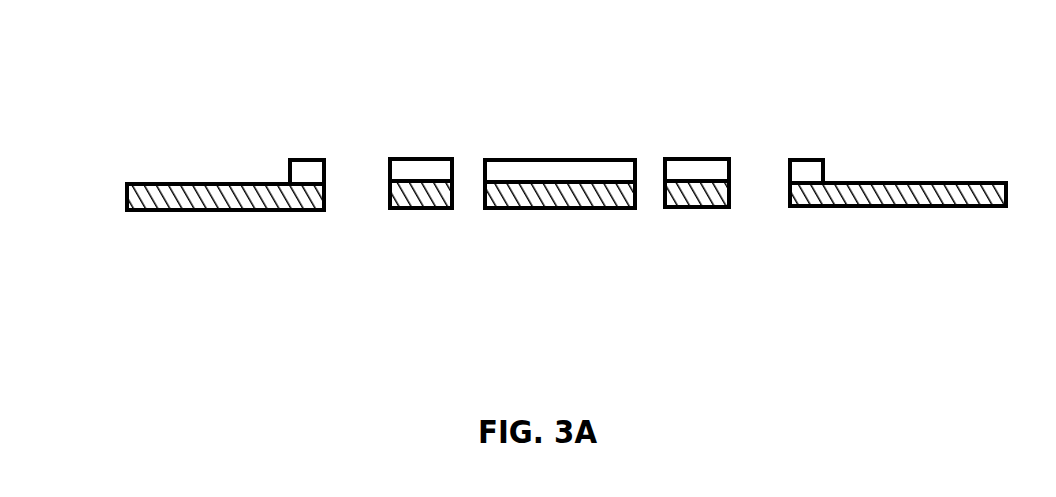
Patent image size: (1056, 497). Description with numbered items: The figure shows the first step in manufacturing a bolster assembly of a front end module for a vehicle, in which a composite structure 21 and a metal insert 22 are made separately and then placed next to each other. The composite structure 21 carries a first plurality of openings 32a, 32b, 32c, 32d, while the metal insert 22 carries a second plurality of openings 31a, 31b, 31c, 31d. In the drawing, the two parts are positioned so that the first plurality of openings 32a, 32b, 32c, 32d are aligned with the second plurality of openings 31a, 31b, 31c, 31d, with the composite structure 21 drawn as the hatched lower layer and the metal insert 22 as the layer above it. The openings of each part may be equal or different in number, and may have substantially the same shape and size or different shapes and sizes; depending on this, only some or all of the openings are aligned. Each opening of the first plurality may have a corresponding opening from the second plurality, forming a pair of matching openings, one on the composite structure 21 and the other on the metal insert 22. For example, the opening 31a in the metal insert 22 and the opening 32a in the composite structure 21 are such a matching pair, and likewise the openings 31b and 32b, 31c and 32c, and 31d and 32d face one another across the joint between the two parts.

The composite structure 21 is at (153, 182).
The metal insert 22 is at (564, 157).
The opening 31a is at (358, 170).
The opening 31b is at (470, 172).
The opening 31c is at (654, 170).
The opening 31d is at (762, 167).
The opening 32a is at (357, 203).
The opening 32b is at (470, 205).
The opening 32c is at (653, 202).
The opening 32d is at (760, 198).